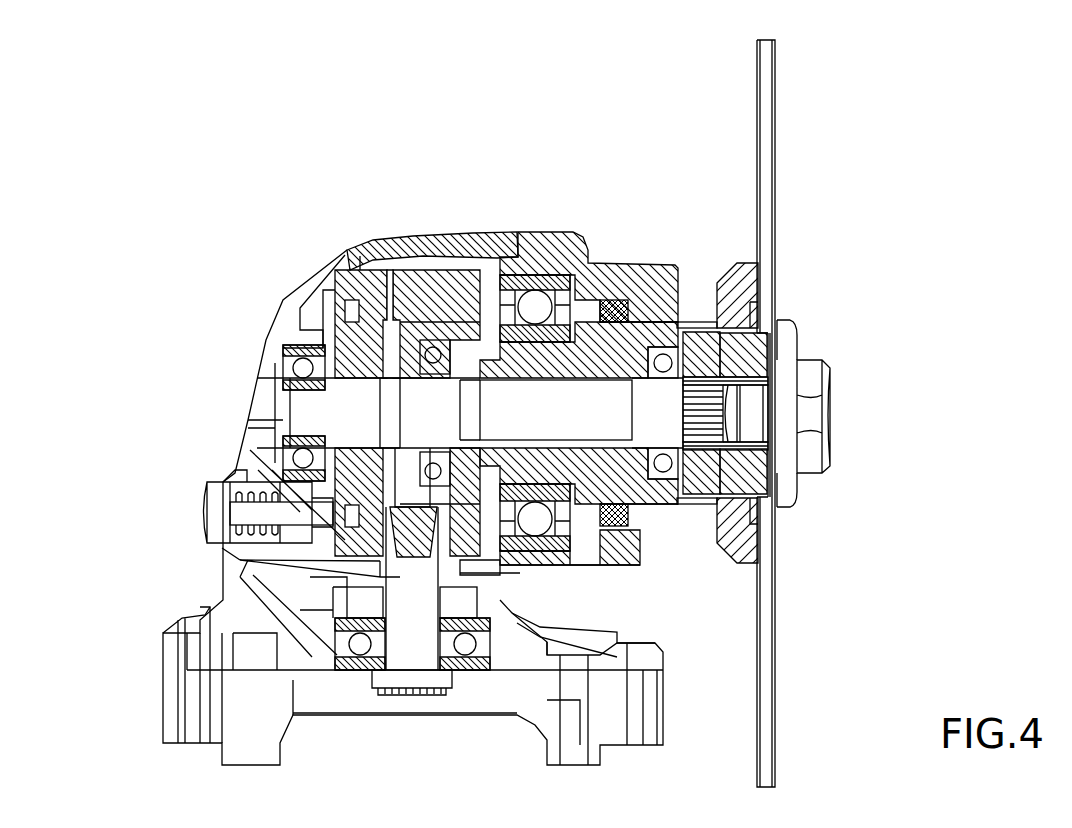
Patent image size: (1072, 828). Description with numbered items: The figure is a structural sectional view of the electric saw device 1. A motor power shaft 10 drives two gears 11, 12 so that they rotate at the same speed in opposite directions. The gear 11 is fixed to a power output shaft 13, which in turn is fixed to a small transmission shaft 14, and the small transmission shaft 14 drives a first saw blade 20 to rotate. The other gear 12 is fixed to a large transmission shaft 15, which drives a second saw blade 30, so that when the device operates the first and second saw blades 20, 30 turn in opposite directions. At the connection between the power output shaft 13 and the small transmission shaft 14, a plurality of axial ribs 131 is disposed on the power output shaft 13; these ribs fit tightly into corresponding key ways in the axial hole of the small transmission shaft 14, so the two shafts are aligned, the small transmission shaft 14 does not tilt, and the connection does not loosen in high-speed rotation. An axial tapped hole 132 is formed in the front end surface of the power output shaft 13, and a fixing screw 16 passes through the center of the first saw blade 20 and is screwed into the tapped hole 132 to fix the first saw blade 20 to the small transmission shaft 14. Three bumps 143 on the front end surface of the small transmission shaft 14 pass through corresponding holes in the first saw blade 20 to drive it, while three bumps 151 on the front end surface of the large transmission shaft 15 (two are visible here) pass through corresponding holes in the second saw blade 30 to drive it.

The electric saw device 1 is at (650, 185).
The motor power shaft 10 is at (405, 540).
The gear 11 is at (340, 283).
The gear 12 is at (458, 278).
The power output shaft 13 is at (660, 427).
The axial ribs 131 is at (708, 398).
The axial tapped hole 132 is at (735, 415).
The small transmission shaft 14 is at (752, 472).
The bumps 143 is at (768, 357).
The large transmission shaft 15 is at (698, 333).
The bumps 151 is at (760, 290).
The fixing screw 16 is at (815, 418).
The first saw blade 20 is at (768, 612).
The second saw blade 30 is at (755, 682).